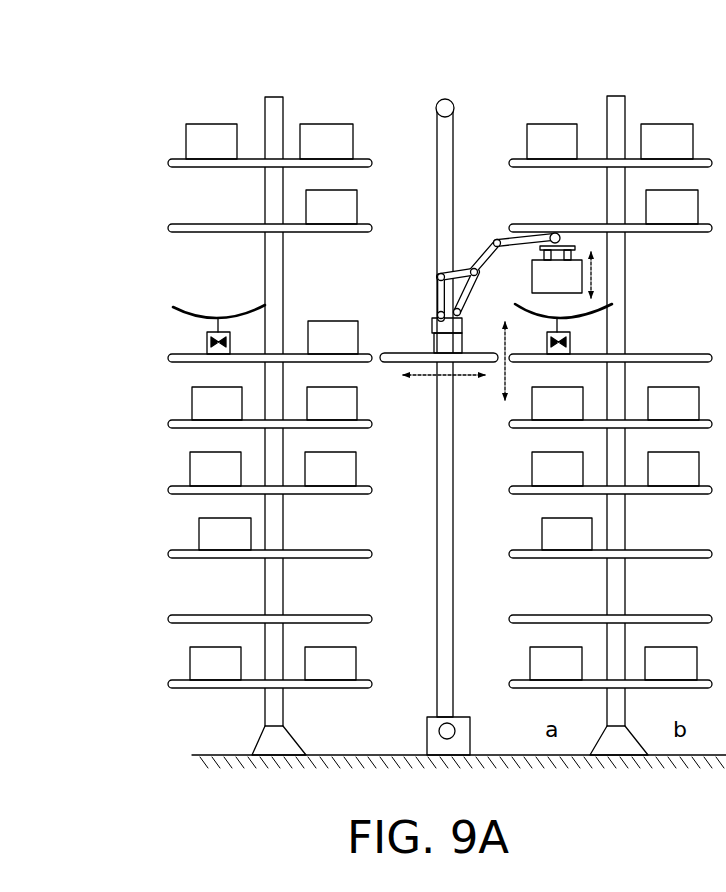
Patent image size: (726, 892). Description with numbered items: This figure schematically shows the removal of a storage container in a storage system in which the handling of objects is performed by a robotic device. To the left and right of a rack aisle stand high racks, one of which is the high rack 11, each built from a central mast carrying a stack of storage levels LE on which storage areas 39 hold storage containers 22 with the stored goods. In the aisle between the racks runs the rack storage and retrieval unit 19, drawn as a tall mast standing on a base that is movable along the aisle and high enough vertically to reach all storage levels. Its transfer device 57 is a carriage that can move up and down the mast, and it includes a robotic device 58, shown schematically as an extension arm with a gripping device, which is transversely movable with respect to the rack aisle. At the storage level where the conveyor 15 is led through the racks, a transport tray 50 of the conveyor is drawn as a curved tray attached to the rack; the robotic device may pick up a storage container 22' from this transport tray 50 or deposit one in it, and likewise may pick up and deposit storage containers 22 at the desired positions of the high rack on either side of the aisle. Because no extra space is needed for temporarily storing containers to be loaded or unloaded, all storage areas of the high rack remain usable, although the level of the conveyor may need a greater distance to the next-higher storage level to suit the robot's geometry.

The high rack 11 is at (233, 387).
The rack storage and retrieval unit 19 is at (466, 93).
The storage container 22 is at (175, 124).
The storage container 22' is at (557, 276).
The transport tray 50 is at (176, 307).
The conveyor 15 is at (206, 341).
The storage area 39 is at (188, 465).
The storage level LE is at (190, 570).
The transfer device 57 is at (404, 358).
The robotic device 58 is at (486, 256).